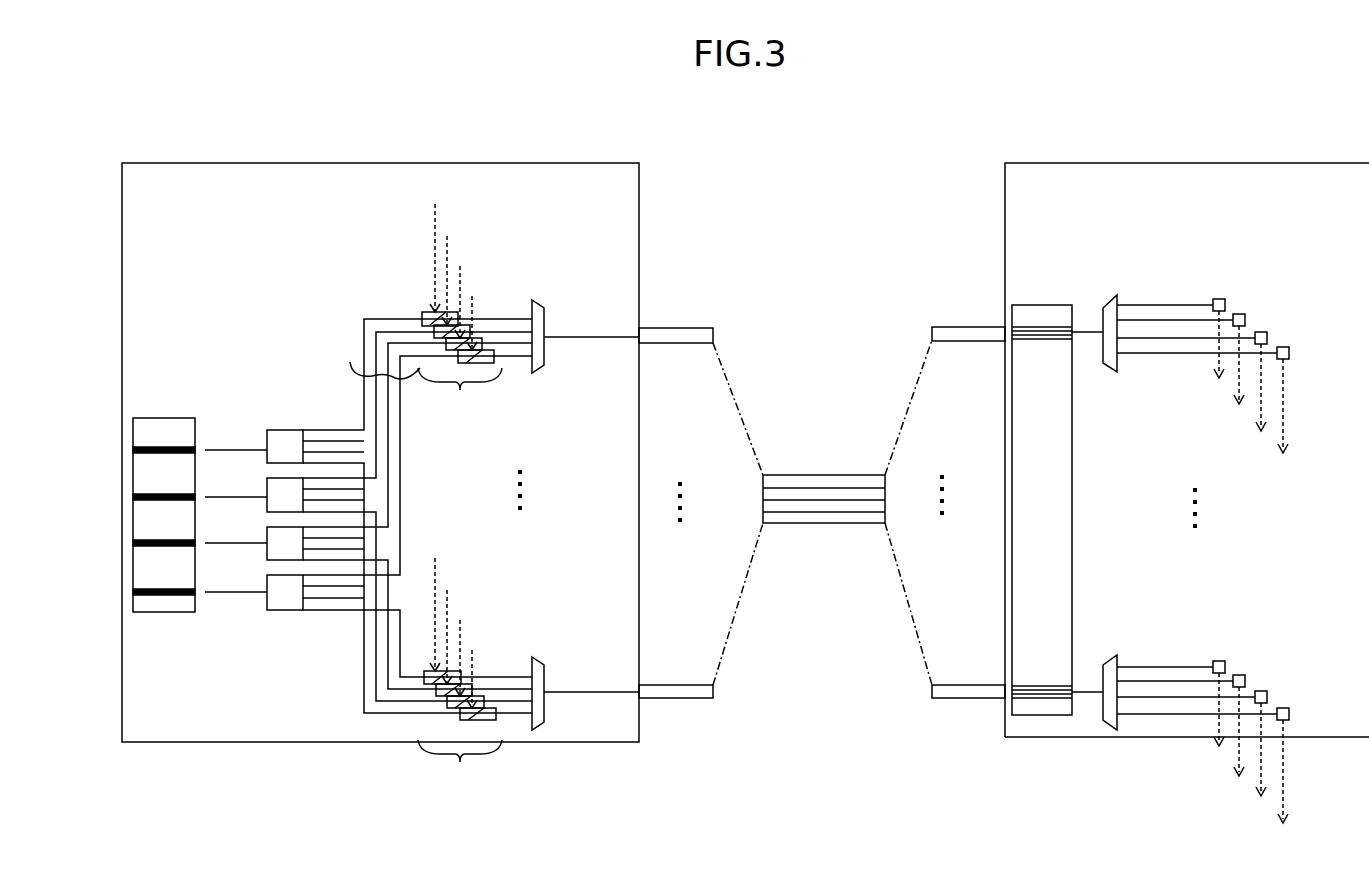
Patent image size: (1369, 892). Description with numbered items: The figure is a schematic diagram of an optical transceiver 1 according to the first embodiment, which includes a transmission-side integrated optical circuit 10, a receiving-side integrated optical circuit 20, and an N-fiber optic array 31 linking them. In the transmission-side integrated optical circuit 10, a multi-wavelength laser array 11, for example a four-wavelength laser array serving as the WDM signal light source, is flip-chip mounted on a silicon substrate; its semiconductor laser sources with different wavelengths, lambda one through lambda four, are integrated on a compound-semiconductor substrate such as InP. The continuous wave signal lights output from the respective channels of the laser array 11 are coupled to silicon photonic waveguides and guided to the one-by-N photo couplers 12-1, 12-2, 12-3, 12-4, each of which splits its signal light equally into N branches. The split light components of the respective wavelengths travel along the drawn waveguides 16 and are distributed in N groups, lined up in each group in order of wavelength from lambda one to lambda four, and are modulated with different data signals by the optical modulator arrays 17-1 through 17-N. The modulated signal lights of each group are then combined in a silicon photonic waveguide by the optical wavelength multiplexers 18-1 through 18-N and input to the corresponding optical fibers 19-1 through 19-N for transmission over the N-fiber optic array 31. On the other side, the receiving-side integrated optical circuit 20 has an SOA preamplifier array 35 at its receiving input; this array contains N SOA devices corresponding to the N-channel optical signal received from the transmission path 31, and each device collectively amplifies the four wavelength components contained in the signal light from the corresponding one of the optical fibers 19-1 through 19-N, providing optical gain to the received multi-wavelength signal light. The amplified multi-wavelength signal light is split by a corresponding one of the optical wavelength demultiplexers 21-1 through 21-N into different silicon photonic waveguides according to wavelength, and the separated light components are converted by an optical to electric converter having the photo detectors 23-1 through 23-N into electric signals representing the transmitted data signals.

The optical transceiver 1 is at (864, 134).
The transmission-side integrated optical circuit 10 is at (176, 163).
The multi-wavelength laser array 11 is at (162, 418).
The 1×N photo coupler 12-1 is at (284, 430).
The 1×N photo coupler 12-2 is at (267, 480).
The 1×N photo coupler 12-3 is at (267, 530).
The 1×N photo coupler 12-4 is at (284, 610).
The optical waveguides 16 is at (352, 364).
The optical modulator array 17-1 is at (476, 298).
The optical modulator array 17-N is at (493, 661).
The optical wavelength multiplexer 18-1 is at (547, 350).
The optical wavelength multiplexer 18-N is at (547, 706).
The optical fiber 19-1 is at (672, 328).
The optical fiber 19-N is at (680, 698).
The receiving-side integrated optical circuit 20 is at (1066, 163).
The optical wavelength demultiplexer 21-1 is at (1106, 300).
The optical wavelength demultiplexer 21-N is at (1107, 660).
The photo detectors 23-1 is at (1300, 355).
The photo detectors 23-N is at (1300, 712).
The N-fiber optic array 31 is at (802, 536).
The SOA preamplifier array 35 is at (1034, 305).